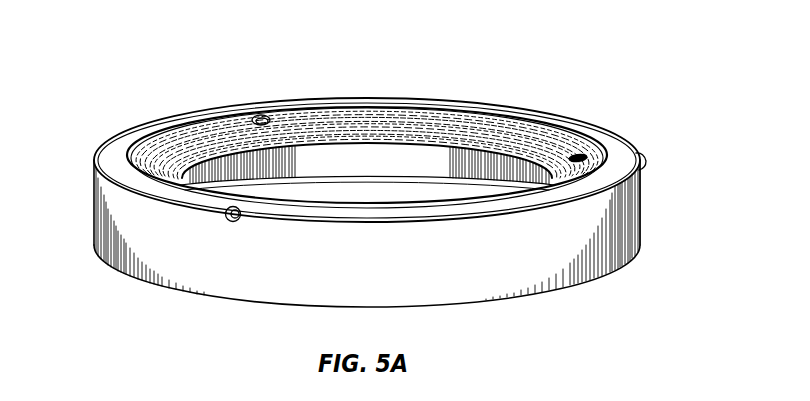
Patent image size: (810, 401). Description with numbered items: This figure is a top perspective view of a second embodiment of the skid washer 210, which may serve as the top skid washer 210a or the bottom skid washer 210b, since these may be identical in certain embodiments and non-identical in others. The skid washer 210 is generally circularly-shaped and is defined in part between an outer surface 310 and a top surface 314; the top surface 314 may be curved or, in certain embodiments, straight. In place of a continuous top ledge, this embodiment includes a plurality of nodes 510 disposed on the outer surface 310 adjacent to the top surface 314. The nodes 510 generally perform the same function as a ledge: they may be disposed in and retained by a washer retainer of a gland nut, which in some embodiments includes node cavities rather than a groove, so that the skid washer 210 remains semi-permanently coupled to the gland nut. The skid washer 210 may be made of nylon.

The skid washer 210 is at (589, 56).
The top skid washer 210a is at (400, 167).
The bottom skid washer 210b is at (400, 167).
The outer surface 310 is at (92, 210).
The top surface 314 is at (606, 137).
The nodes 510 is at (237, 106).